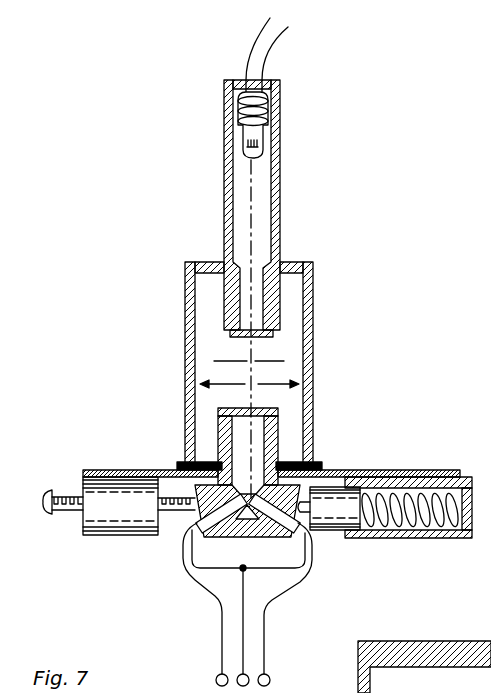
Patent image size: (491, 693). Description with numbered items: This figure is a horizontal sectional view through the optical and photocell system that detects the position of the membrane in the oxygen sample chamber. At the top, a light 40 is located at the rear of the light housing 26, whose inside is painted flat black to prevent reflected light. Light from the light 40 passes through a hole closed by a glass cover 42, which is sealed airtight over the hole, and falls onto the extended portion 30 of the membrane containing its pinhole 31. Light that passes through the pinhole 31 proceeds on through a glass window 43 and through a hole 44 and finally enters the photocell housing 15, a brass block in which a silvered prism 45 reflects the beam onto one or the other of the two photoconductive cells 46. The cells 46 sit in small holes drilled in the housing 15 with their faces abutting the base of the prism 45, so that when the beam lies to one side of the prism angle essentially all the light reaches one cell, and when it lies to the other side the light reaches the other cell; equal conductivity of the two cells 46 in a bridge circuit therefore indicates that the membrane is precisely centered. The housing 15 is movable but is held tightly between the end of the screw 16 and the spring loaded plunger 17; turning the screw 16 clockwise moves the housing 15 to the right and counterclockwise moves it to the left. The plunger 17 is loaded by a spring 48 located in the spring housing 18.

The photocell housing 15 is at (232, 530).
The screw 16 is at (45, 506).
The spring loaded plunger 17 is at (333, 529).
The spring housing 18 is at (447, 538).
The light housing 26 is at (281, 215).
The extended portion of the membrane 30 is at (256, 362).
The pinhole 31 is at (245, 360).
The light 40 is at (265, 139).
The glass cover 42 is at (274, 320).
The glass window 43 is at (249, 395).
The hole 44 is at (258, 437).
The silvered prism 45 is at (258, 530).
The photoconductive cells 46 is at (197, 524).
The spring 48 is at (408, 530).